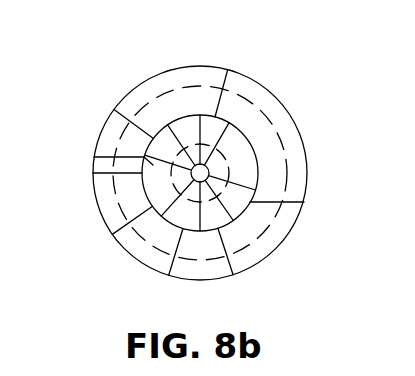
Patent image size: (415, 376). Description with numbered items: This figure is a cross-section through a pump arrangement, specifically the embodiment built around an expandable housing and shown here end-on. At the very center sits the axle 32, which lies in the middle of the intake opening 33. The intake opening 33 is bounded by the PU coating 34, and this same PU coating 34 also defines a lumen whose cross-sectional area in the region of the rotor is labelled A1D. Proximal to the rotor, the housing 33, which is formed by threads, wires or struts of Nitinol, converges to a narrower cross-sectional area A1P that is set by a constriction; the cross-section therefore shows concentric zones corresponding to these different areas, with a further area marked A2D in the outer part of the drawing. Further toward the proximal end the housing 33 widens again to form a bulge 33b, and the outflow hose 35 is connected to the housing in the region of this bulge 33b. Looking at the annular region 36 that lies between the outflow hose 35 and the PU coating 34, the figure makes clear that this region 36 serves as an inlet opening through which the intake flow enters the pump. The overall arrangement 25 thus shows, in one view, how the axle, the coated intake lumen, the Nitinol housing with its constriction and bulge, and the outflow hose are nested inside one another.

The sample holder 25 is at (10, 363).
The axle 32 is at (208, 169).
The intake opening 33 is at (229, 123).
The bulge 33b is at (135, 112).
The PU coating 34 is at (205, 83).
The outflow hose 35 is at (95, 203).
The region 36 is at (150, 248).
The cross-sectional area in the region of the rotor A1D is at (94, 157).
The distal area 2 A2D is at (285, 131).
The cross-sectional area at the constriction A1P is at (304, 202).